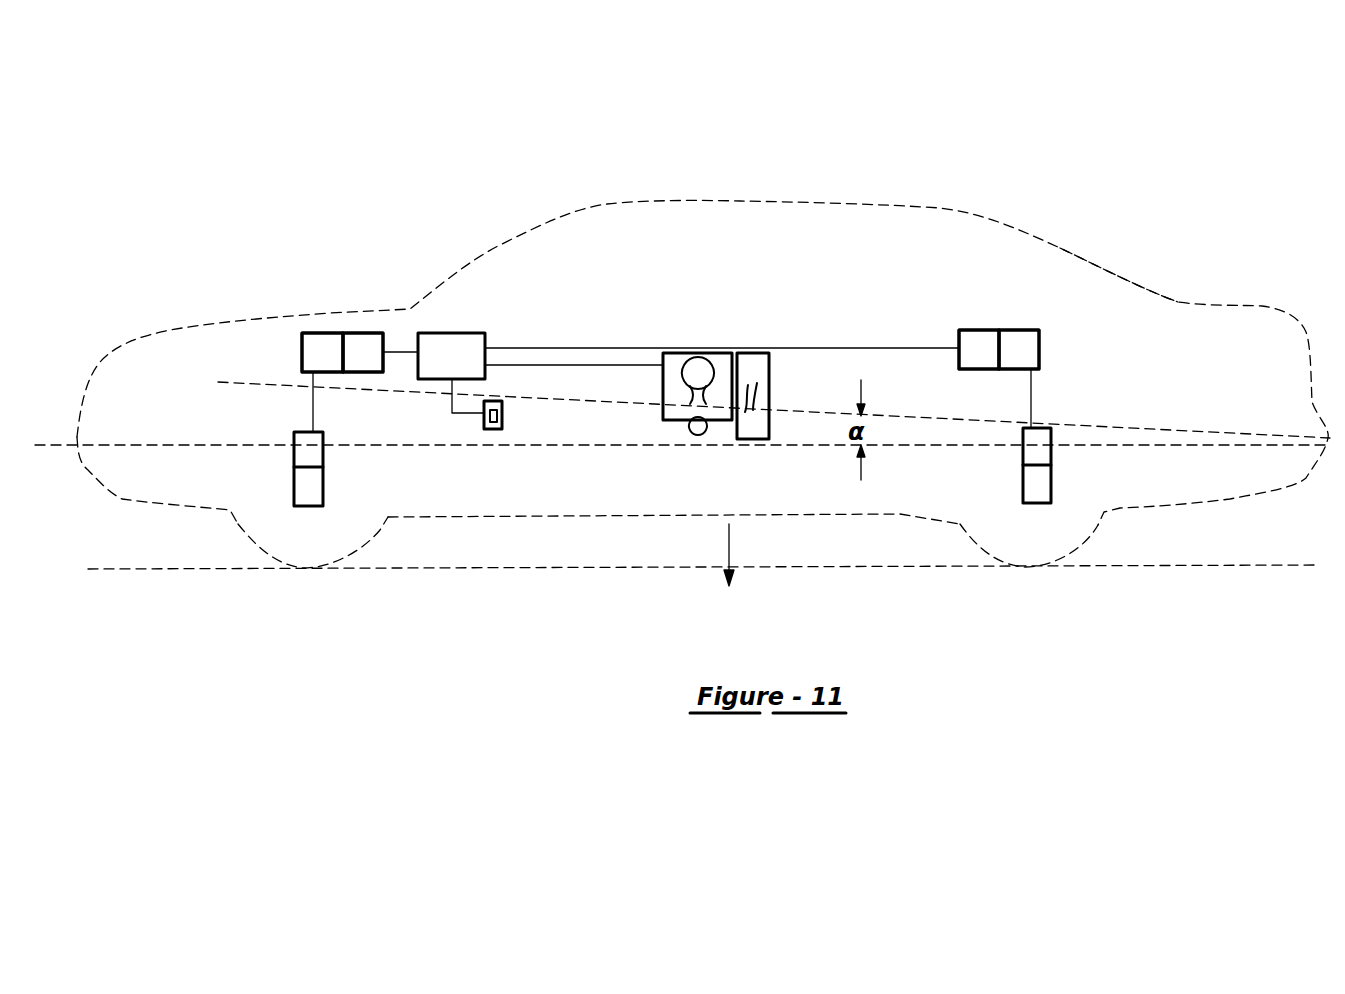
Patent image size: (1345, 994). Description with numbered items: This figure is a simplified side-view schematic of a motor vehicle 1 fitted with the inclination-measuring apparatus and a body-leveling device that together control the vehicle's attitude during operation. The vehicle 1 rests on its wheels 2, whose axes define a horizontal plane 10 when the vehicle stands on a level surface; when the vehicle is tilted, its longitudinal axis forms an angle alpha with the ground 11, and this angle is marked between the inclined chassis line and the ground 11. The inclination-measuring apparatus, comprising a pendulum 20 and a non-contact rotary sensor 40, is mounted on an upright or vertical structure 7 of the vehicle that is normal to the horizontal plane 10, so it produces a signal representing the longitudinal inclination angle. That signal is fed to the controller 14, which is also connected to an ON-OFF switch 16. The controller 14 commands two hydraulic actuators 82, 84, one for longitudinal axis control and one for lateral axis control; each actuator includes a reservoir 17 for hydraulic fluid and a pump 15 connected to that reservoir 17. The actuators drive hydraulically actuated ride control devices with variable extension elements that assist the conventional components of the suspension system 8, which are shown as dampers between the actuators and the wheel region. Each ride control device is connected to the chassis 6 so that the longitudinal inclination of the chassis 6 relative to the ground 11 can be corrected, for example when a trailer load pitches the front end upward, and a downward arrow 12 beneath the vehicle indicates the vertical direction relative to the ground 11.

The motor vehicle 1 is at (606, 203).
The wheels 2 is at (378, 541).
The chassis 6 is at (1090, 256).
The upright or vertical structure 7 is at (769, 399).
The suspension system 8 is at (300, 450).
The horizontal plane 10 is at (150, 446).
The ground 11 is at (1270, 564).
The gravity direction 12 is at (747, 563).
The controller 14 is at (447, 352).
The pump 15 is at (361, 335).
The ON-OFF switch 16 is at (483, 421).
The reservoir 17 is at (314, 342).
The pendulum 20 is at (674, 334).
The non-contact rotary sensor 40 is at (724, 355).
The hydraulic actuator 82 is at (334, 292).
The hydraulic actuator 84 is at (1018, 262).